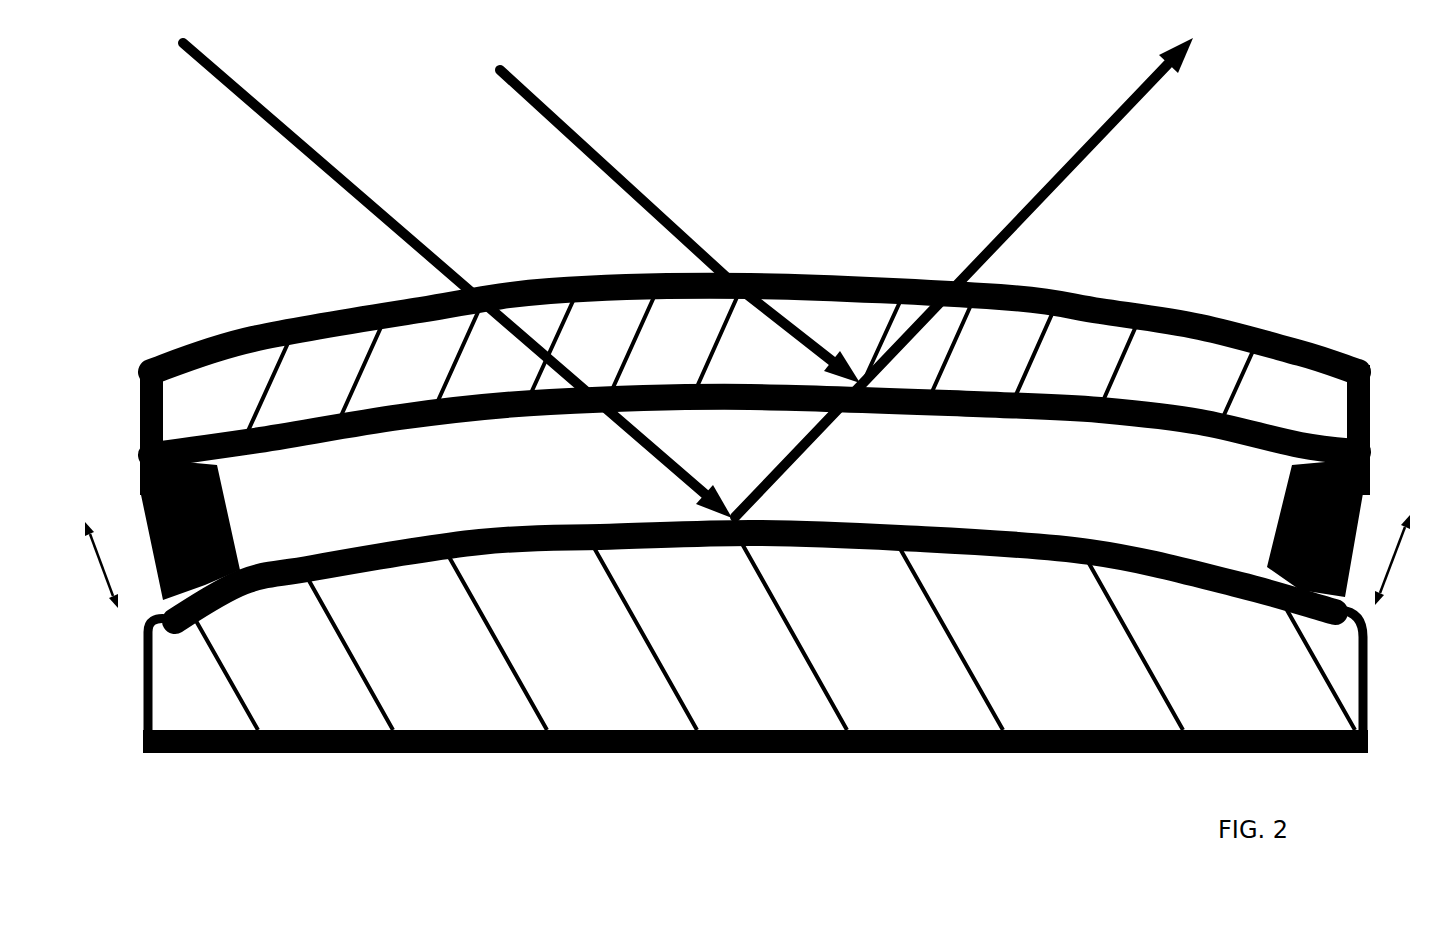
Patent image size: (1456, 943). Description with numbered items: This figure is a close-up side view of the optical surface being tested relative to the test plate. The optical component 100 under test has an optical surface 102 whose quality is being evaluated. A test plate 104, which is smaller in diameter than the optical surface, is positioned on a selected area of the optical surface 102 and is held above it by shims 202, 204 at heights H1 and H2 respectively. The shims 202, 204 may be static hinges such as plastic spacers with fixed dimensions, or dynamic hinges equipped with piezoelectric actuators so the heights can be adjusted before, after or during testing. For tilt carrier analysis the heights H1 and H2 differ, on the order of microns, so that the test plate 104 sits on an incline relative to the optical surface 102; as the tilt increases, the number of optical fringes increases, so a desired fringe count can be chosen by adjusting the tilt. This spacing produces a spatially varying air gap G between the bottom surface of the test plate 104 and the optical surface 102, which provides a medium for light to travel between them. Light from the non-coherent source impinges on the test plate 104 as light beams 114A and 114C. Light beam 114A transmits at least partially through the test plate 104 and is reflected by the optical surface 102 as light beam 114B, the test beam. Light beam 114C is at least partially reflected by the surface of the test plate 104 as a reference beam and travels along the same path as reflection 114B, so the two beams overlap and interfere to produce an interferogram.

The optical component 100 is at (755, 643).
The optical surface 102 is at (755, 559).
The test plate 104 is at (755, 390).
The shim 202 is at (211, 525).
The shim 204 is at (1305, 523).
The air gap G is at (926, 469).
The light beam 114A is at (457, 280).
The light beam 114B is at (964, 277).
The light beam 114C is at (680, 224).
The height H1 is at (91, 565).
The height H2 is at (1407, 560).